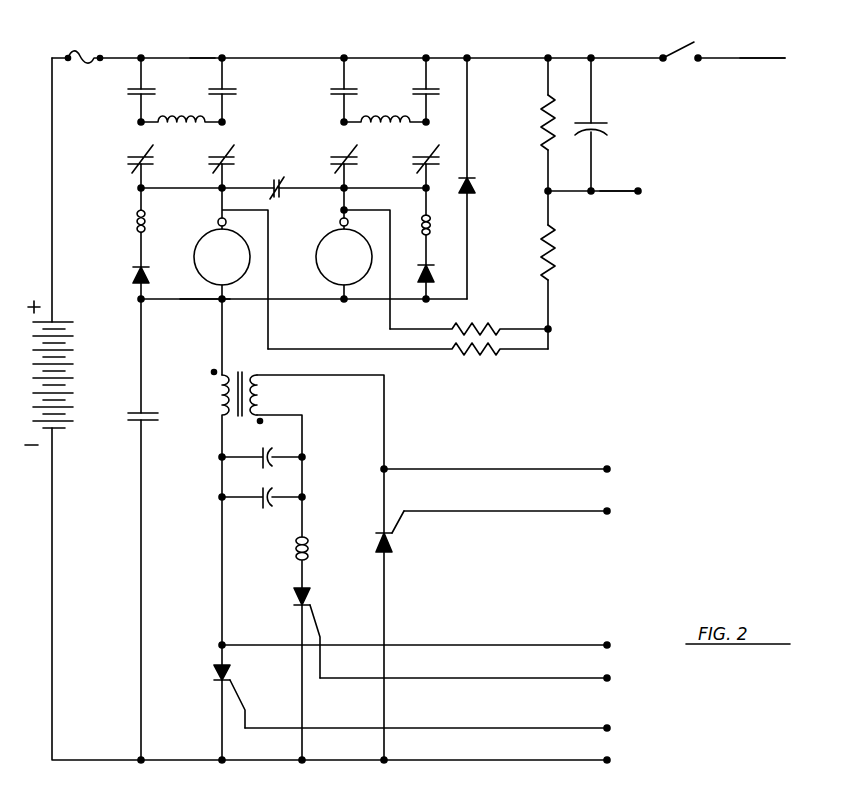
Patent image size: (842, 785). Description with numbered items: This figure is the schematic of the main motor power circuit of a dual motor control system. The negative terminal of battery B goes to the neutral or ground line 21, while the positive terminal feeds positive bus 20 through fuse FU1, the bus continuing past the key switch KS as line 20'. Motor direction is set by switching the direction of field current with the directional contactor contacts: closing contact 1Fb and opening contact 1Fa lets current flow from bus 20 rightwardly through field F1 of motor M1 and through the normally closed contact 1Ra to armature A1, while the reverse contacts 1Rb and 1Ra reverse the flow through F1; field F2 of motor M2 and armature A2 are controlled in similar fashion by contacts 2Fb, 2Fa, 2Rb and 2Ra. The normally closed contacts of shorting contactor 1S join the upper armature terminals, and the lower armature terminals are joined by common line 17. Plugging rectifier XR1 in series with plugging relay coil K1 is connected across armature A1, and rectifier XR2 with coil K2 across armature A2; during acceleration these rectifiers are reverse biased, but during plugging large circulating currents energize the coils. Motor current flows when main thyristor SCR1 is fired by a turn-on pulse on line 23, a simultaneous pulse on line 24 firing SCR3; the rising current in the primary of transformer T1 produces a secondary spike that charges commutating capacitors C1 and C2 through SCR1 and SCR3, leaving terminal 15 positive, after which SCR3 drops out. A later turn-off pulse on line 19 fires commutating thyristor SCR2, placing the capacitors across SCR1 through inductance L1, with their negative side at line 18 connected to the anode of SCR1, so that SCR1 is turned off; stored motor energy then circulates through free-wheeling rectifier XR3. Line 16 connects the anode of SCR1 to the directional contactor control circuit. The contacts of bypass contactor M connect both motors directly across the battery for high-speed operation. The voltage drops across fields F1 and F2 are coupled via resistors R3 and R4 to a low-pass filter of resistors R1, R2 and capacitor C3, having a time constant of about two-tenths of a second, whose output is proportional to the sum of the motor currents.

The fuse FU1 is at (82, 44).
The positive bus 20 is at (403, 249).
The supply conductor 20' is at (773, 42).
The battery B is at (60, 375).
The forward contactor contact 1Fb is at (128, 88).
The reverse relay contact motor 1 1Rb is at (232, 96).
The field winding F1 is at (200, 128).
The forward contactor contact 1Fa is at (130, 166).
The normally closed reverse contactor contact 1Ra is at (238, 149).
The shorting contactor 1S is at (270, 183).
The forward relay contact motor 2 2Fb is at (332, 85).
The reverse relay contact motor 2 2Rb is at (424, 85).
The field winding F2 is at (385, 132).
The forward relay contact motor 2 2Fa is at (332, 152).
The reverse relay contact motor 2 2Ra is at (420, 166).
The plugging relay coil K1 is at (133, 223).
The plugging relay coil K2 is at (433, 227).
The motor M1 is at (195, 230).
The armature A1 is at (222, 257).
The motor M2 is at (317, 230).
The armature A2 is at (344, 257).
The plugging rectifier XR1 is at (133, 277).
The plugging rectifier XR2 is at (433, 276).
The free-wheeling rectifier XR3 is at (470, 184).
The resistor R1 is at (546, 130).
The resistor R2 is at (551, 238).
The resistor R3 is at (498, 324).
The resistor R4 is at (499, 352).
The capacitor C3 is at (602, 137).
The key switch KS is at (677, 73).
The neutral or ground line 21 is at (639, 195).
The common conductor 17 is at (206, 302).
The transformer T1 is at (298, 555).
The bypass contactor M is at (133, 418).
The commutating capacitor C1 is at (262, 456).
The commutating capacitor C2 is at (264, 499).
The conductor 18 is at (214, 495).
The terminal 15 is at (303, 477).
The inductance L1 is at (299, 546).
The main thyristor SCR1 is at (209, 683).
The commutating thyristor SCR2 is at (298, 605).
The thyristor SCR3 is at (394, 553).
The line 24 is at (608, 511).
The line 16 is at (607, 644).
The line 19 is at (606, 678).
The line 23 is at (607, 727).